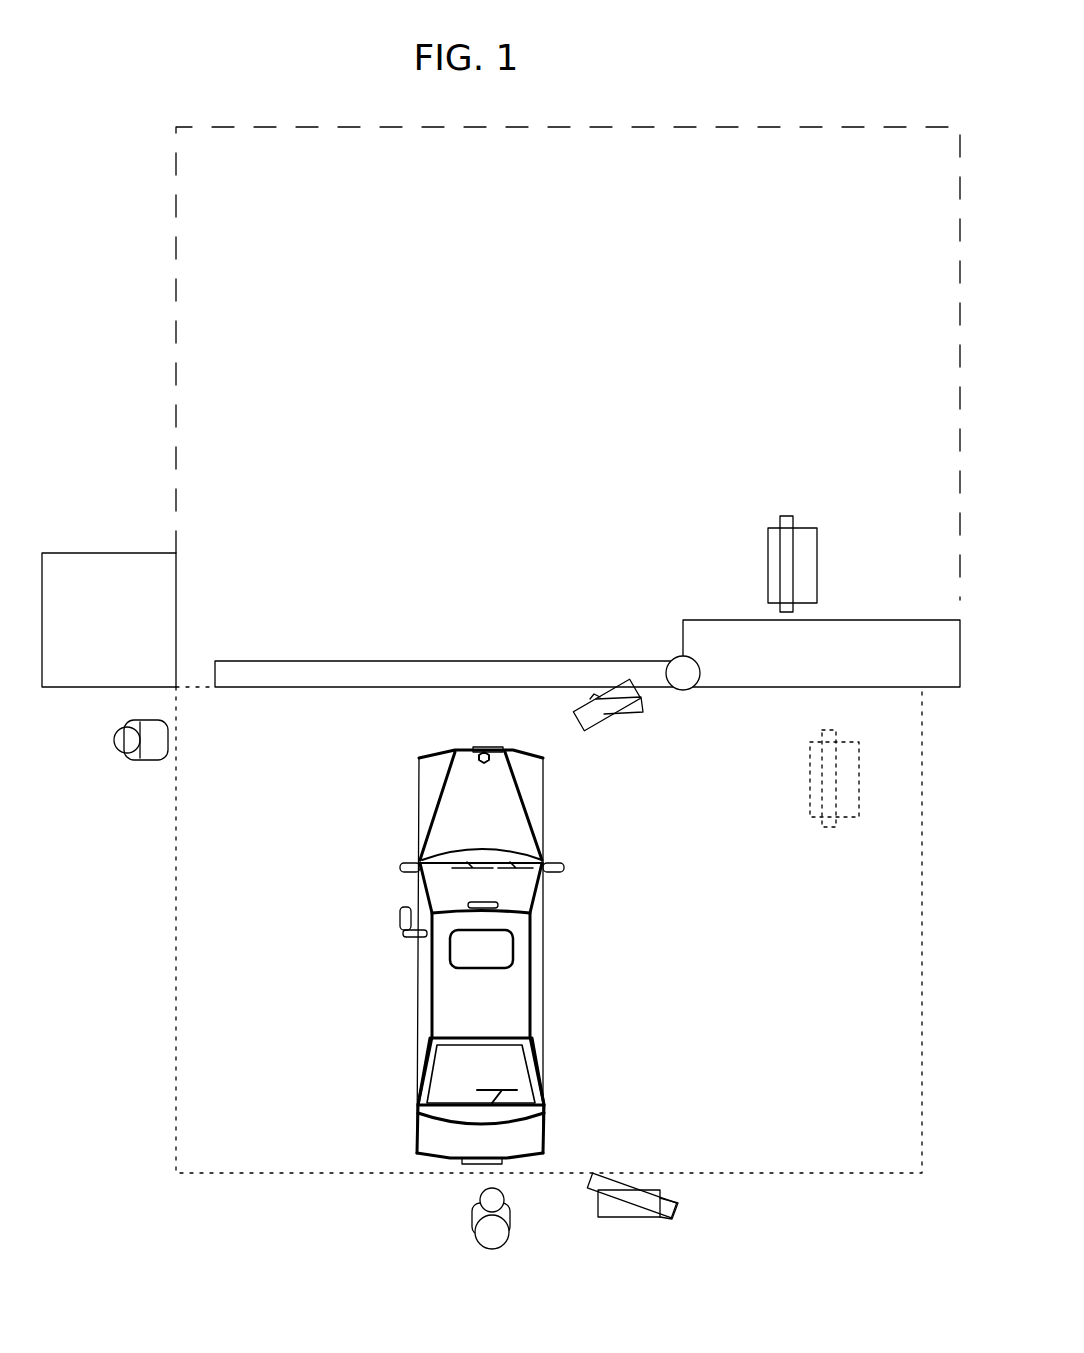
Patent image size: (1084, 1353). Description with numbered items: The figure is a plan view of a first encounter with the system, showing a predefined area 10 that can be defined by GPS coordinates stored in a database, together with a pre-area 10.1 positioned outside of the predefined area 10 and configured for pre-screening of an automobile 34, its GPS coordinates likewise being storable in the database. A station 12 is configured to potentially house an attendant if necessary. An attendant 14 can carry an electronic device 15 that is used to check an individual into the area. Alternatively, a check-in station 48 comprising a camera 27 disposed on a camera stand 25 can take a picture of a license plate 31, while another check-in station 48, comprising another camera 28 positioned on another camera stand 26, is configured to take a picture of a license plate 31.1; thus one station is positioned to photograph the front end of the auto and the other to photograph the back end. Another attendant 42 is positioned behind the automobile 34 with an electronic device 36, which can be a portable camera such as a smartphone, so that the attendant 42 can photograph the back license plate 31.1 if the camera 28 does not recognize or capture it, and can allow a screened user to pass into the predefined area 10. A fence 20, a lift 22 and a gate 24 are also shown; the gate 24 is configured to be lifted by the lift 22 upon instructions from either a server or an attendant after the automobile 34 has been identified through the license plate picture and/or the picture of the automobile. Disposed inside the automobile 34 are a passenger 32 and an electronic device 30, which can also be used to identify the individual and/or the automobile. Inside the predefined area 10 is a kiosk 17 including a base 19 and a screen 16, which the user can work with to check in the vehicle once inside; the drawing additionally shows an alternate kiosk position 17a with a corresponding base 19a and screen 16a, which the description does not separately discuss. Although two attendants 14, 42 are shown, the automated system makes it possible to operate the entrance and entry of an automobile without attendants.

The predefined area 10 is at (135, 380).
The pre-area 10.1 is at (212, 969).
The station 12 is at (100, 578).
The attendant 14 is at (122, 750).
The electronic device 15 is at (160, 742).
The screen 16 is at (787, 521).
The alternate sensor device position 16a is at (831, 740).
The kiosk 17 is at (819, 520).
The alternate sensor unit position 17a is at (855, 801).
The base 19 is at (808, 547).
The alternate sensor housing position 19a is at (848, 762).
The fence 20 is at (786, 673).
The lift 22 is at (676, 665).
The gate 24 is at (488, 673).
The camera stand 25 is at (641, 708).
The camera stand 26 is at (658, 1196).
The camera 27 is at (597, 712).
The camera 28 is at (678, 1205).
The electronic device 30 is at (400, 918).
The license plate 31 is at (475, 748).
The license plate 31.1 is at (462, 1162).
The passenger 32 is at (413, 936).
The automobile 34 is at (457, 808).
The electronic device 36 is at (490, 1200).
The attendant 42 is at (488, 1232).
The check-in station 48 is at (668, 768).